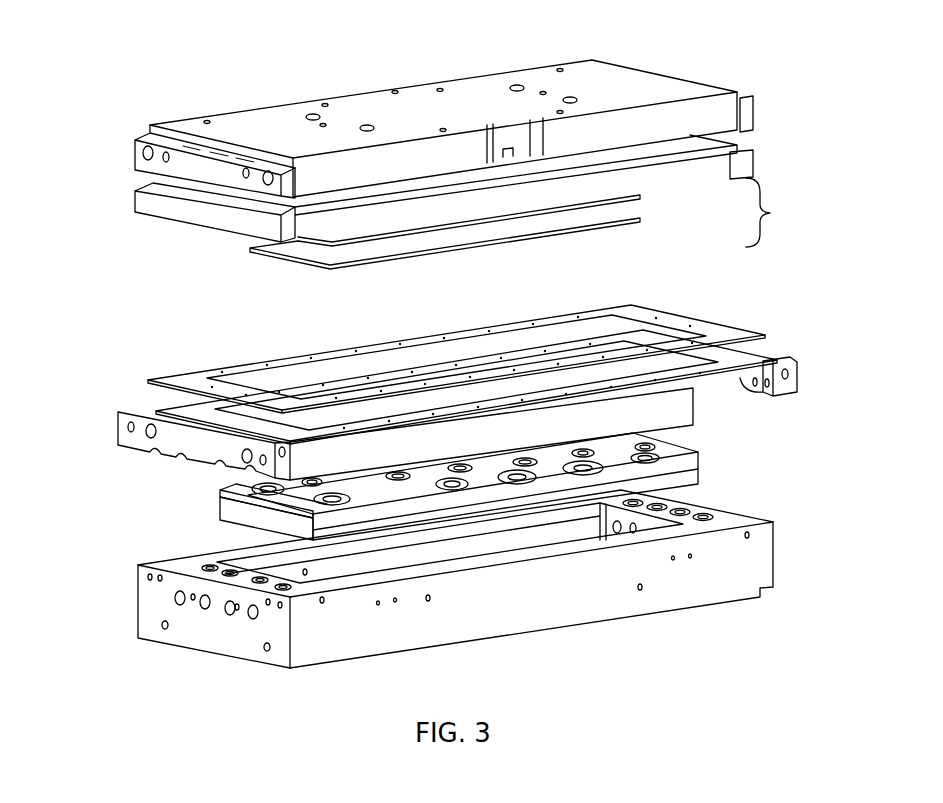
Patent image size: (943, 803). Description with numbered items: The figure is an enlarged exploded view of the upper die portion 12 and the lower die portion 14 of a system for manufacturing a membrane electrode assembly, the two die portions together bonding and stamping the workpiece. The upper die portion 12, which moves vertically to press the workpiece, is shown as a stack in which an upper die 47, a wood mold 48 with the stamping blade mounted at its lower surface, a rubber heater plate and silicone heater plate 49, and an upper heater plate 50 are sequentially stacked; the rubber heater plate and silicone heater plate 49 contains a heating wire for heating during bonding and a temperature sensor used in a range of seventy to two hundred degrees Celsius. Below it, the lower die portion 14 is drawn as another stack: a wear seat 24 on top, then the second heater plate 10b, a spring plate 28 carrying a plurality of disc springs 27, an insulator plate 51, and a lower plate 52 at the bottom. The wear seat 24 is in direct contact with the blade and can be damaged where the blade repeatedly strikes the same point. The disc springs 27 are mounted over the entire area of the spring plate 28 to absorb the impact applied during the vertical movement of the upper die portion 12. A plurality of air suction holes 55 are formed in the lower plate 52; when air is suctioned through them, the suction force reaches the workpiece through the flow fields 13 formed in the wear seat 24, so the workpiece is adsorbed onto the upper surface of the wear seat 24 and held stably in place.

The upper die portion 12 is at (182, 231).
The upper die 47 is at (650, 86).
The wood mold 48 is at (727, 159).
The rubber heater plate and silicone heater plate 49 is at (622, 192).
The upper heater plate 50 is at (622, 219).
The lower die portion 14 is at (134, 542).
The wear seat 24 is at (670, 322).
The flow fields 13 is at (187, 410).
The second heater plate 10b is at (668, 406).
The spring plate 28 is at (685, 460).
The insulator plate 51 is at (685, 477).
The disc spring 27 is at (220, 490).
The air suction holes 55 is at (227, 497).
The lower plate 52 is at (712, 592).